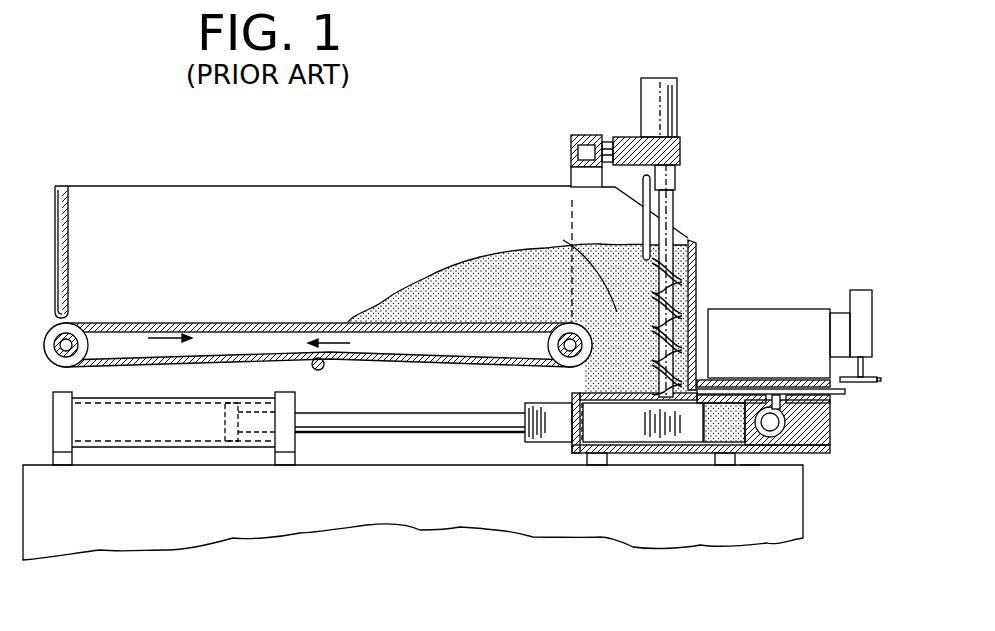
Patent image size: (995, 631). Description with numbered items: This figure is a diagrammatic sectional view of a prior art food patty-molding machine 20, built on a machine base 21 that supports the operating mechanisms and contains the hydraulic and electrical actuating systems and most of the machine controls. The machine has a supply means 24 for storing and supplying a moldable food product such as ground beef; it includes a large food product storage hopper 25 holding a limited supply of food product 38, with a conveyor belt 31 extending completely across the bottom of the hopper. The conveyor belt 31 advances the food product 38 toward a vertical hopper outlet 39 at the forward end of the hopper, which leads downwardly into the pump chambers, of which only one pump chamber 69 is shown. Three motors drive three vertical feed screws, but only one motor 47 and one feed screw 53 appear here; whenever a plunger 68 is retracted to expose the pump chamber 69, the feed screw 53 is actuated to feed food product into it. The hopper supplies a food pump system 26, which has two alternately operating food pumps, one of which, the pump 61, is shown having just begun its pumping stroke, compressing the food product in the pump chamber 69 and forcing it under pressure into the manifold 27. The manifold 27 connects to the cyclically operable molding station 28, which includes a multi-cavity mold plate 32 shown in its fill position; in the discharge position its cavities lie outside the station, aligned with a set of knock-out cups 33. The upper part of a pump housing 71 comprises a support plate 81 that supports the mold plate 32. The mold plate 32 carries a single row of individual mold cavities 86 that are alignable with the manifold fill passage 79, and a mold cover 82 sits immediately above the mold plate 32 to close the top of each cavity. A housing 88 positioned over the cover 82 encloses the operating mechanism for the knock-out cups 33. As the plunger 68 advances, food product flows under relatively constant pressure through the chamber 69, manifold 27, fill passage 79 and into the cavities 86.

The food patty-forming machine 20 is at (715, 236).
The machine base 21 is at (172, 535).
The supply means 24 is at (619, 125).
The food product storage hopper 25 is at (232, 185).
The food pump system 26 is at (443, 444).
The manifold 27 is at (759, 473).
The molding station 28 is at (752, 304).
The conveyor belt 31 is at (456, 358).
The mold plate 32 is at (845, 392).
The knock-out cups 33 is at (880, 380).
The food product 38 is at (414, 293).
The hopper outlet 39 is at (563, 240).
The motor 47 is at (676, 104).
The feed screw 53 is at (684, 274).
The pump 61 is at (307, 410).
The plunger 68 is at (525, 442).
The pump chamber 69 is at (716, 445).
The pump housing 71 is at (663, 453).
The fill passage 79 is at (797, 404).
The support plate 81 is at (830, 404).
The mold cover 82 is at (733, 380).
The mold cavities 86 is at (784, 394).
The housing 88 is at (808, 309).